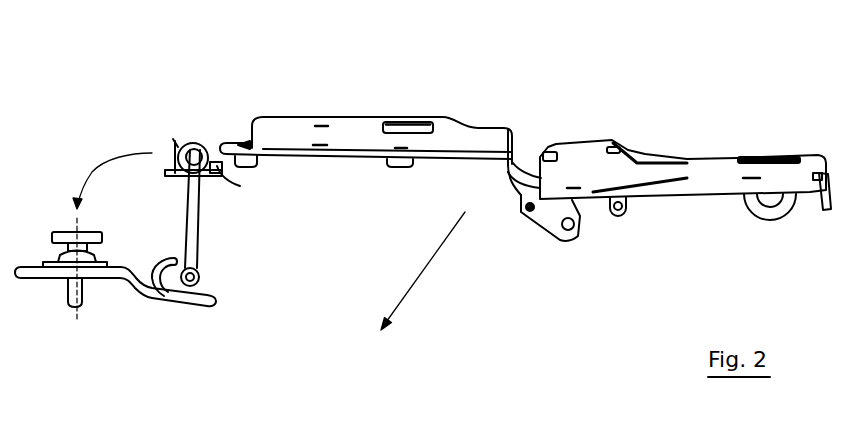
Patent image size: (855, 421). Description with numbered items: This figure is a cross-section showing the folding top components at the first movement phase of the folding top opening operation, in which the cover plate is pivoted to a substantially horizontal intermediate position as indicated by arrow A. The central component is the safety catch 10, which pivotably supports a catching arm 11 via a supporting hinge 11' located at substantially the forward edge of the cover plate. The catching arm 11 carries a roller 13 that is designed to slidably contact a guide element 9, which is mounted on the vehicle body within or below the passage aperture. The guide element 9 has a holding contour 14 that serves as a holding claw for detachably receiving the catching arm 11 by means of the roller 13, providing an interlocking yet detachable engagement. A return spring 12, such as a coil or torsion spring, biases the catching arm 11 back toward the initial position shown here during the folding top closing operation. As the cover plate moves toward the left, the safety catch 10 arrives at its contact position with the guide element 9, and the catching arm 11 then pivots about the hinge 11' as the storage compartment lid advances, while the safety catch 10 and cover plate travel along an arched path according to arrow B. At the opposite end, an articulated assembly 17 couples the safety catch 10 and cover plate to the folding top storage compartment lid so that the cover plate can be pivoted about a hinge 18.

The guide element 9 is at (132, 299).
The safety catch 10 is at (216, 100).
The catching arm 11 is at (265, 219).
The supporting hinge 11' is at (218, 116).
The return spring 12 is at (240, 186).
The roller 13 is at (200, 276).
The holding contour 14 is at (150, 286).
The articulated assembly 17 is at (634, 226).
The hinge 18 is at (524, 212).
The arrow A is at (438, 252).
The arrow B is at (122, 157).